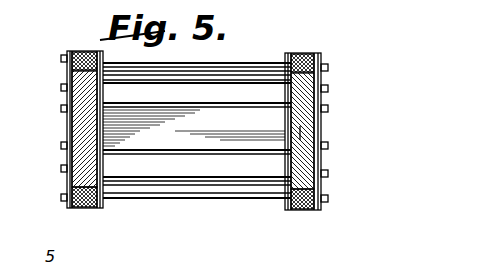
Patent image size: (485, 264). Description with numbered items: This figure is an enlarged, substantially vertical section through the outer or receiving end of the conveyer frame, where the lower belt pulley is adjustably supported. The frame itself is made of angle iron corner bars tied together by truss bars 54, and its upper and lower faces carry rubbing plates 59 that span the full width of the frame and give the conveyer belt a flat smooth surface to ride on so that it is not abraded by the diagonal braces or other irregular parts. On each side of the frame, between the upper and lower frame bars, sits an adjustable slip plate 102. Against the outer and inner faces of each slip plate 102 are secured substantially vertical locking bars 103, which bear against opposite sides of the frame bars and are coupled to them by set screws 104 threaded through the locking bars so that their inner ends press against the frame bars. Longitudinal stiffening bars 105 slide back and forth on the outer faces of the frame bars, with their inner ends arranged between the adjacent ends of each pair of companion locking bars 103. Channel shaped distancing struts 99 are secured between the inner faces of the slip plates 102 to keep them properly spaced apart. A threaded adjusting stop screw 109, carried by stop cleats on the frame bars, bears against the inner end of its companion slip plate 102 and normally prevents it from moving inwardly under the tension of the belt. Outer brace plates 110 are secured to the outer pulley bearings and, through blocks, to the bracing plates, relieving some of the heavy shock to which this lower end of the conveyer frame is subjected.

The truss bars 54 is at (202, 79).
The rubbing plates 59 is at (246, 70).
The channel shaped distancing struts 99 is at (262, 150).
The slip plate 102 is at (100, 163).
The locking bars 103 is at (100, 208).
The set screws 104 is at (63, 96).
The stiffening bars 105 is at (302, 56).
The adjusting stop screw 109 is at (300, 133).
The outer brace plates 110 is at (70, 131).